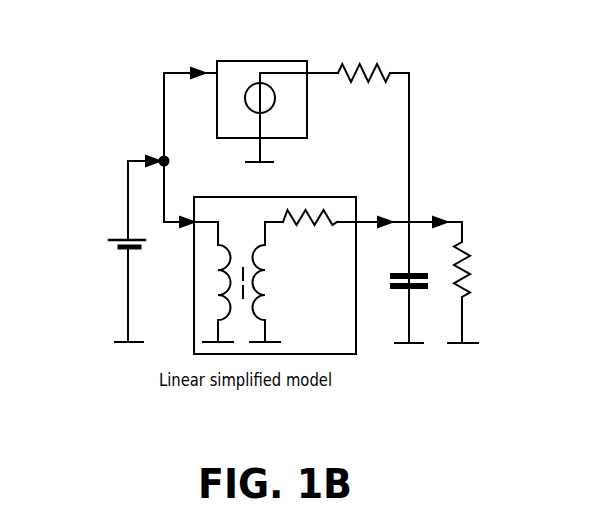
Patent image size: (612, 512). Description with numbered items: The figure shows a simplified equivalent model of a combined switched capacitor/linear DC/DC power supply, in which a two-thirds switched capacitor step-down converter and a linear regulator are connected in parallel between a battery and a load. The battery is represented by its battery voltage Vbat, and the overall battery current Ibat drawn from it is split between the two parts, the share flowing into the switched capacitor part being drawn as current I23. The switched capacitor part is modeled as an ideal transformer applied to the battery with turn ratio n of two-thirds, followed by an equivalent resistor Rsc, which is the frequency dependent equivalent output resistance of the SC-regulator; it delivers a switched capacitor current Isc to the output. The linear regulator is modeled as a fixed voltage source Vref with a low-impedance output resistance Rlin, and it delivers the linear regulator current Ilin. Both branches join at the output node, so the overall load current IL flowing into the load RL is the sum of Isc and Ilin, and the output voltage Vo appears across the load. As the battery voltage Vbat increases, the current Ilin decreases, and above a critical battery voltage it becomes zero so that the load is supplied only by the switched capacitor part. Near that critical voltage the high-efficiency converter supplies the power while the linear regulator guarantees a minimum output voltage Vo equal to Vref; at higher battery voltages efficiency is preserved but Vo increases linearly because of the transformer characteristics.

The linear regulator current Ilin is at (190, 57).
The output resistance Rlin is at (358, 56).
The fixed voltage source Vref is at (262, 111).
The overall battery current Ibat is at (132, 146).
The battery voltage Vbat is at (114, 251).
The switched-capacitor input current I23 is at (177, 236).
The turn ratio n is at (263, 282).
The equivalent resistor Rsc is at (310, 232).
The switched capacitor current Isc is at (380, 206).
The overall load current IL is at (437, 206).
The output voltage Vo is at (462, 204).
The load RL is at (471, 282).